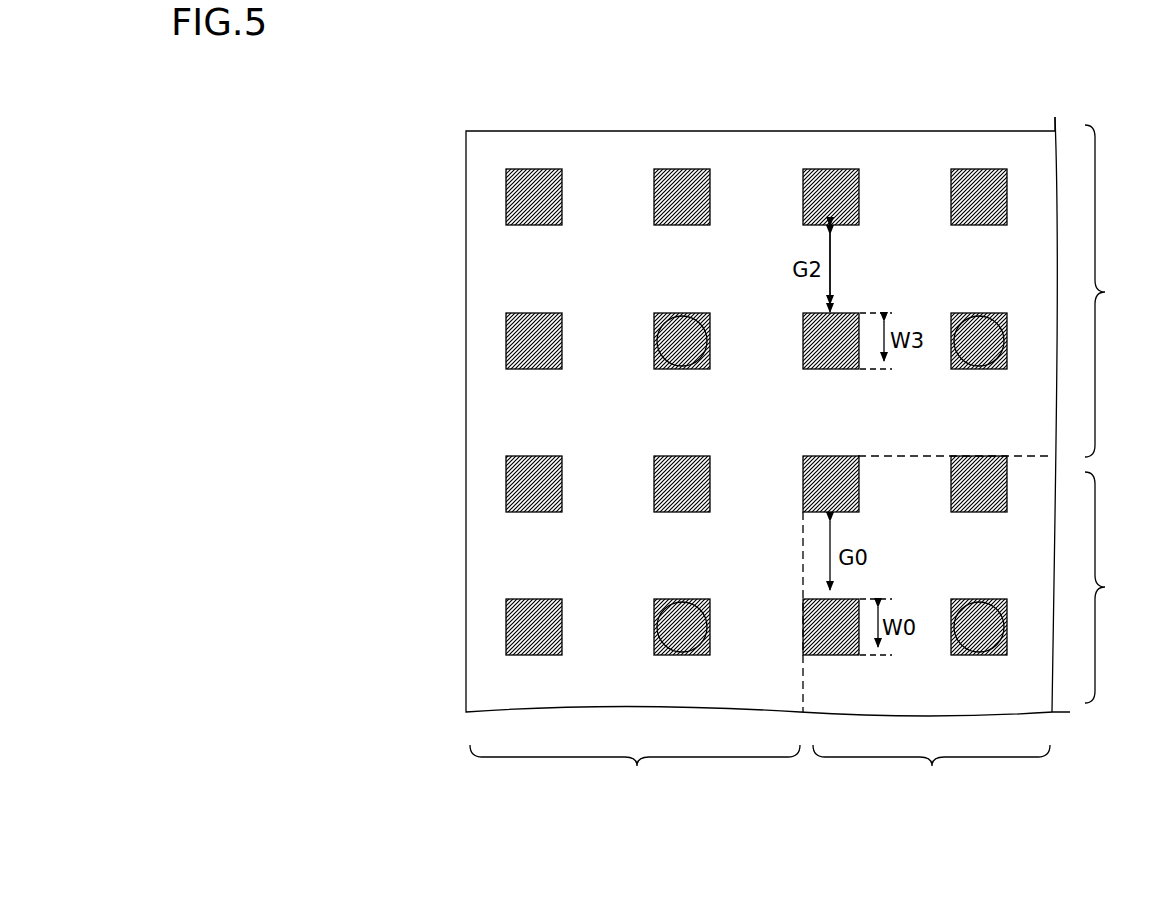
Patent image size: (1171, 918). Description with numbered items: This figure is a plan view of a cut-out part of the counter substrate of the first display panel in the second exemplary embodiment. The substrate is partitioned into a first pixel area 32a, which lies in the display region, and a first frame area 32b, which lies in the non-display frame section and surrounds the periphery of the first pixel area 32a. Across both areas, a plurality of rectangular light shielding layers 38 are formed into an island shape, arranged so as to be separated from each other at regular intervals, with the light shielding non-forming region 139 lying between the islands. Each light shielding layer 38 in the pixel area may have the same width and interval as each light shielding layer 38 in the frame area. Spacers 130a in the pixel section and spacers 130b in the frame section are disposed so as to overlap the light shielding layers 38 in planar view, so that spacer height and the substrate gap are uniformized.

The light shielding non-forming region 139 is at (731, 180).
The light shielding layer 38 is at (831, 180).
The spacer 130b is at (978, 316).
The spacer 130a is at (978, 604).
The first frame area 32b is at (815, 466).
The first pixel area 32a is at (986, 640).